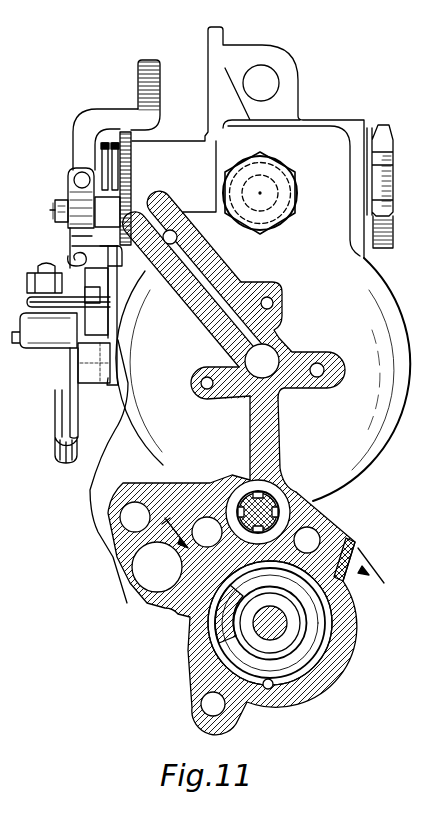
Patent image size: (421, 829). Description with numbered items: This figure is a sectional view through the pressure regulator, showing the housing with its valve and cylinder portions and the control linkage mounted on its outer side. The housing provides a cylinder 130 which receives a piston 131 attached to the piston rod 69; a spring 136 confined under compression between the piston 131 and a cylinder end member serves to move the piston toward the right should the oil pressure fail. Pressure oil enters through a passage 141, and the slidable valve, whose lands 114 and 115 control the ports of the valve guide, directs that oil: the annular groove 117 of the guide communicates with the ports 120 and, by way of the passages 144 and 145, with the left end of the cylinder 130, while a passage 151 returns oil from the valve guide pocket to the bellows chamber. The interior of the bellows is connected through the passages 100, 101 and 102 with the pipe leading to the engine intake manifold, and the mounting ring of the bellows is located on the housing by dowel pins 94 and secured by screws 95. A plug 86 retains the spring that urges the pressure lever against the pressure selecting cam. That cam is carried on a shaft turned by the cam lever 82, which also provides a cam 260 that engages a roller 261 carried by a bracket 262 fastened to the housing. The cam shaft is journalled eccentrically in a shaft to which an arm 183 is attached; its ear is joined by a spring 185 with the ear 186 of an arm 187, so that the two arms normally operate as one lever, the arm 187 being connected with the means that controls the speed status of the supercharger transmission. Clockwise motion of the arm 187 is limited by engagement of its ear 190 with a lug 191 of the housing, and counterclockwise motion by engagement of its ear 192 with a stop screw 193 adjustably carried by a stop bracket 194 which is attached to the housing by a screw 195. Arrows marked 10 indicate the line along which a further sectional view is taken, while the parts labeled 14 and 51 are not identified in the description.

The section line / direction arrows 10 is at (273, 550).
The mounting plate 14 is at (28, 296).
The fitting 51 is at (34, 211).
The piston rod 69 is at (262, 627).
The lever 82 is at (96, 112).
The plug 86 is at (280, 172).
The dowel pins 94 is at (205, 318).
The screws 95 is at (268, 300).
The passage 100 is at (270, 358).
The passage 101 is at (192, 300).
The passage 102 is at (174, 230).
The valve land 114 is at (316, 470).
The valve land 115 is at (27, 188).
The annular groove 117 is at (287, 482).
The ports 120 is at (254, 490).
The cylinder 130 is at (268, 690).
The piston 131 is at (215, 660).
The spring 136 is at (240, 612).
The passage 141 is at (125, 514).
The passage 144 is at (352, 540).
The passage 145 is at (310, 538).
The passage 151 is at (207, 517).
The arm 183 is at (105, 142).
The spring 185 is at (68, 258).
The ear 186 is at (122, 262).
The arm 187 is at (116, 142).
The ear 190 is at (98, 372).
The lug 191 is at (120, 405).
The ear 192 is at (46, 350).
The stop screw 193 is at (27, 285).
The stop bracket 194 is at (108, 284).
The screw 195 is at (118, 320).
The cam 260 is at (70, 243).
The roller 261 is at (70, 198).
The bracket 262 is at (131, 158).